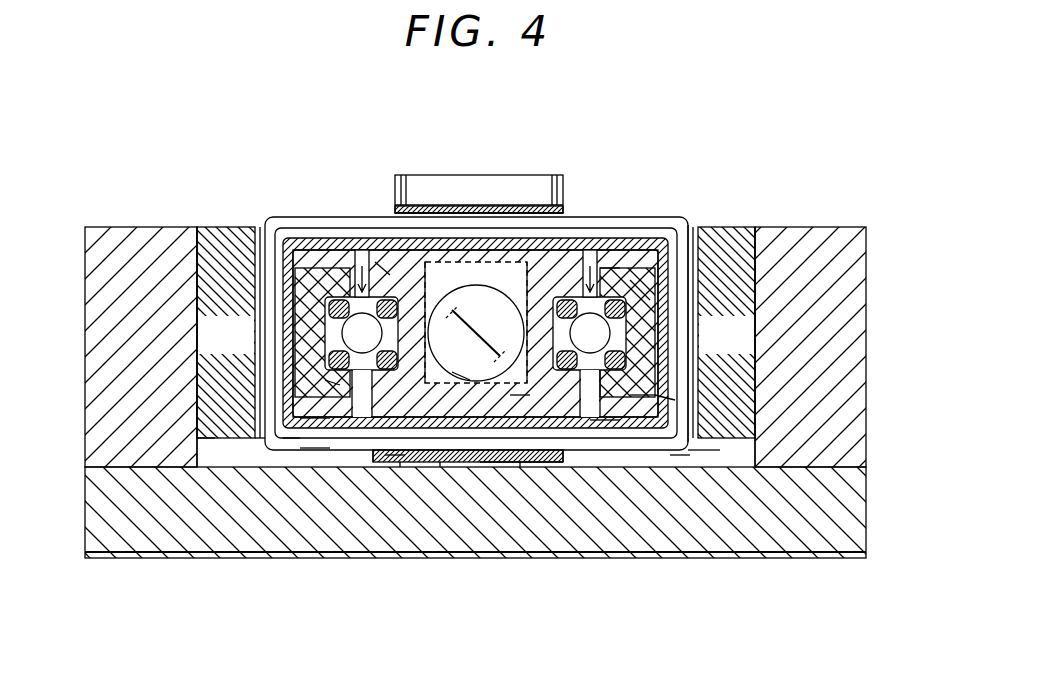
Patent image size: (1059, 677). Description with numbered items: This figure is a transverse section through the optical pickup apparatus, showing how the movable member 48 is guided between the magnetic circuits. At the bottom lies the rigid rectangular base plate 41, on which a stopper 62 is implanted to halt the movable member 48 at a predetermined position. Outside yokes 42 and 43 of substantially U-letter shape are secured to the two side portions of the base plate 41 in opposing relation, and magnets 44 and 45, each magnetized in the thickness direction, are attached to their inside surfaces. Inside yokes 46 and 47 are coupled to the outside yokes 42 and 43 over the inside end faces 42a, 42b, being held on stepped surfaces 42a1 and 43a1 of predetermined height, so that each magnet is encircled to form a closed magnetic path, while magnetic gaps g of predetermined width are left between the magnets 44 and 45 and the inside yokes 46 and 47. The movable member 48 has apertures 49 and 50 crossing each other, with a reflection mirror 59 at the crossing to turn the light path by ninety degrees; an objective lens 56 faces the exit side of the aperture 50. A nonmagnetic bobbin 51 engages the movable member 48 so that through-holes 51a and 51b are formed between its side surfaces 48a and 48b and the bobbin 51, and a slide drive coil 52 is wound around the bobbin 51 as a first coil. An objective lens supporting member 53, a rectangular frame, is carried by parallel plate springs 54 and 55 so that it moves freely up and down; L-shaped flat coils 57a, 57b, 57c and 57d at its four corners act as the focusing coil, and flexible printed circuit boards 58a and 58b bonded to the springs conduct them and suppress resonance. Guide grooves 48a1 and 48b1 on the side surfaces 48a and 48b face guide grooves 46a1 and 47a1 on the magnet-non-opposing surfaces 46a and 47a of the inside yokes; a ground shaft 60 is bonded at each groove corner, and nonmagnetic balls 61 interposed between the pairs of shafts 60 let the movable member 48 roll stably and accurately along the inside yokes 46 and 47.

The base plate 41 is at (98, 483).
The outside yoke 42 is at (112, 236).
The inside end face 42a is at (310, 230).
The stepped surface 42a1 is at (290, 440).
The inside end face 42b is at (690, 240).
The outside yoke 43 is at (828, 300).
The stepped surface 43a1 is at (680, 457).
The magnet 44 is at (204, 232).
The magnet 45 is at (790, 250).
The inside yoke 46 is at (247, 236).
The magnet-non-opposing surface 46a is at (258, 434).
The guide groove 46a1 is at (200, 440).
The inside yoke 47 is at (712, 372).
The magnet-non-opposing surface 47a is at (640, 395).
The guide groove 47a1 is at (640, 290).
The movable member 48 is at (392, 292).
The side surface 48a is at (345, 392).
The guide groove 48a1 is at (383, 272).
The side surface 48b is at (610, 395).
The guide groove 48b1 is at (520, 397).
The aperture 49 is at (452, 372).
The aperture 50 is at (560, 262).
The bobbin 51 is at (330, 385).
The through-hole 51a is at (361, 330).
The through-hole 51b is at (592, 330).
The slide drive coil 52 is at (700, 450).
The objective lens supporting member 53 is at (310, 448).
The parallel plate spring 54 is at (478, 286).
The parallel plate spring 55 is at (470, 400).
The objective lens 56 is at (504, 196).
The flat coil 57a is at (304, 222).
The flat coil 57b is at (318, 418).
The flat coil 57c is at (610, 272).
The flat coil 57d is at (605, 420).
The flexible printed circuit board 58a is at (520, 238).
The flexible printed circuit board 58b is at (525, 455).
The reflection mirror 59 is at (463, 256).
The shaft 60 is at (665, 398).
The ball 61 is at (359, 285).
The stopper 62 is at (362, 410).
The magnetic gap g is at (262, 245).